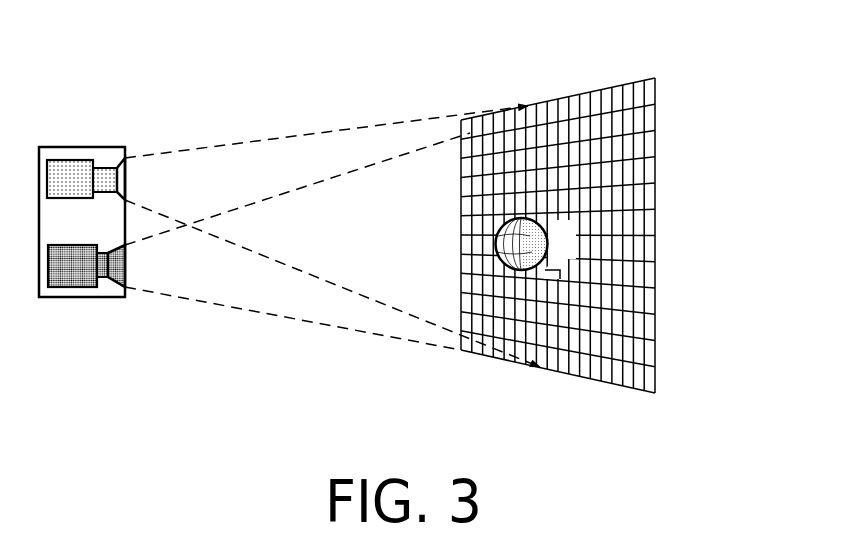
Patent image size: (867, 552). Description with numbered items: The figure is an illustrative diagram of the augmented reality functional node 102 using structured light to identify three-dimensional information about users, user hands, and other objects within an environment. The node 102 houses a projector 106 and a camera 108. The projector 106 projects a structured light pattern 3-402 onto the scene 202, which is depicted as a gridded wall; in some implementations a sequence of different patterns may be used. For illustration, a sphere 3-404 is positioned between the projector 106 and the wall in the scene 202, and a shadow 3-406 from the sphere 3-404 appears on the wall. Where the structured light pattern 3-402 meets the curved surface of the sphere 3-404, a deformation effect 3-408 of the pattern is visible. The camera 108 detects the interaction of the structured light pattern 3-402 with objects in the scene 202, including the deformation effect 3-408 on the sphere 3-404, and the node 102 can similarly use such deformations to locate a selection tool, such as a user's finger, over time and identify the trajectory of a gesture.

The augmented reality functional node 102 is at (66, 298).
The projector 106 is at (70, 180).
The camera 108 is at (90, 283).
The scene 202 is at (668, 393).
The structured light pattern 3-402 is at (460, 133).
The sphere 3-404 is at (519, 215).
The shadow 3-406 is at (563, 232).
The deformation effect 3-408 is at (507, 253).